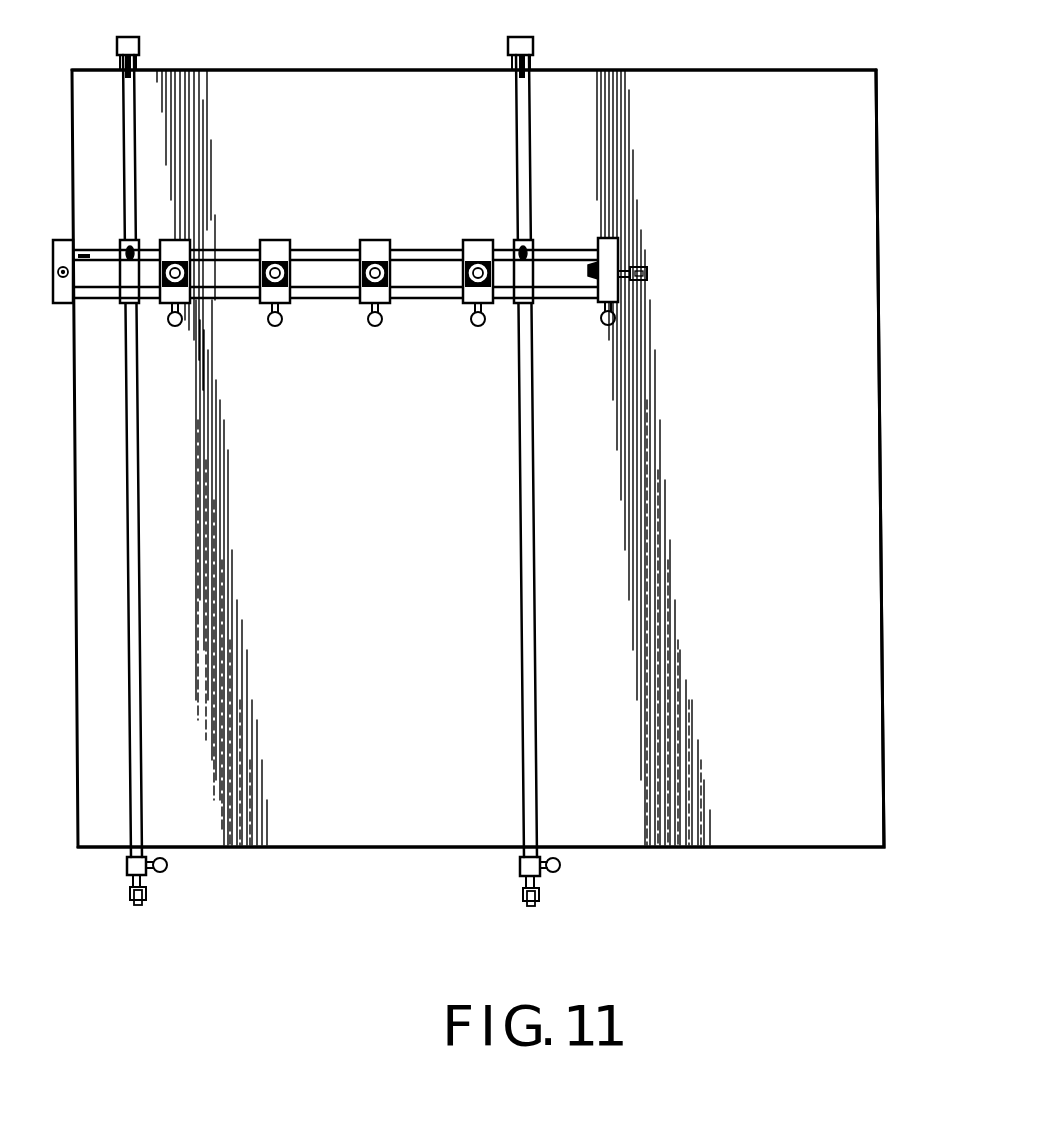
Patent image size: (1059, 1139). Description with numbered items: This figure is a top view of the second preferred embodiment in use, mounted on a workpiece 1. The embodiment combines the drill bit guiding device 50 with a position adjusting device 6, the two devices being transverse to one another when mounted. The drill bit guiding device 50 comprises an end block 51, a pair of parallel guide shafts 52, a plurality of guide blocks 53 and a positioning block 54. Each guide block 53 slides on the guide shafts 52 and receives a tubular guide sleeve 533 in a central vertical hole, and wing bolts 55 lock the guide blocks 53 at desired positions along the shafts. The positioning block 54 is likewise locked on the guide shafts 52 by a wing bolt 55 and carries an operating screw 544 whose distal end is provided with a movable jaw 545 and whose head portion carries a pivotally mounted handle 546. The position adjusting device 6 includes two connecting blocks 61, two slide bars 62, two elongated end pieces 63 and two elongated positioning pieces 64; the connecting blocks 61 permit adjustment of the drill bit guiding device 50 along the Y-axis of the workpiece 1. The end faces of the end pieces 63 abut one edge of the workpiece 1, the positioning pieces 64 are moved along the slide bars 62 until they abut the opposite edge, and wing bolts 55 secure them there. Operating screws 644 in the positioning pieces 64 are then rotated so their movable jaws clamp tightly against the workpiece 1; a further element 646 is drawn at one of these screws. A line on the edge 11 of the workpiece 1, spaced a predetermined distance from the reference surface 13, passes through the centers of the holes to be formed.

The workpiece 1 is at (833, 76).
The edge 11 is at (783, 69).
The reference surface 13 is at (845, 793).
The position adjusting device 6 is at (360, 484).
The drill bit guiding device 50 is at (384, 518).
The end block 51 is at (68, 296).
The guide shafts 52 is at (425, 252).
The guide blocks 53 is at (274, 302).
The guide sleeve 533 is at (266, 250).
The positioning block 54 is at (608, 238).
The operating screw 544 is at (637, 260).
The movable jaw 545 is at (589, 271).
The handle 546 is at (650, 273).
The wing bolts 55 is at (118, 245).
The connecting blocks 61 is at (132, 242).
The slide bars 62 is at (138, 612).
The elongated end pieces 63 is at (130, 47).
The elongated positioning pieces 64 is at (128, 869).
The operating screws 644 is at (540, 893).
The bolt 646 is at (535, 905).